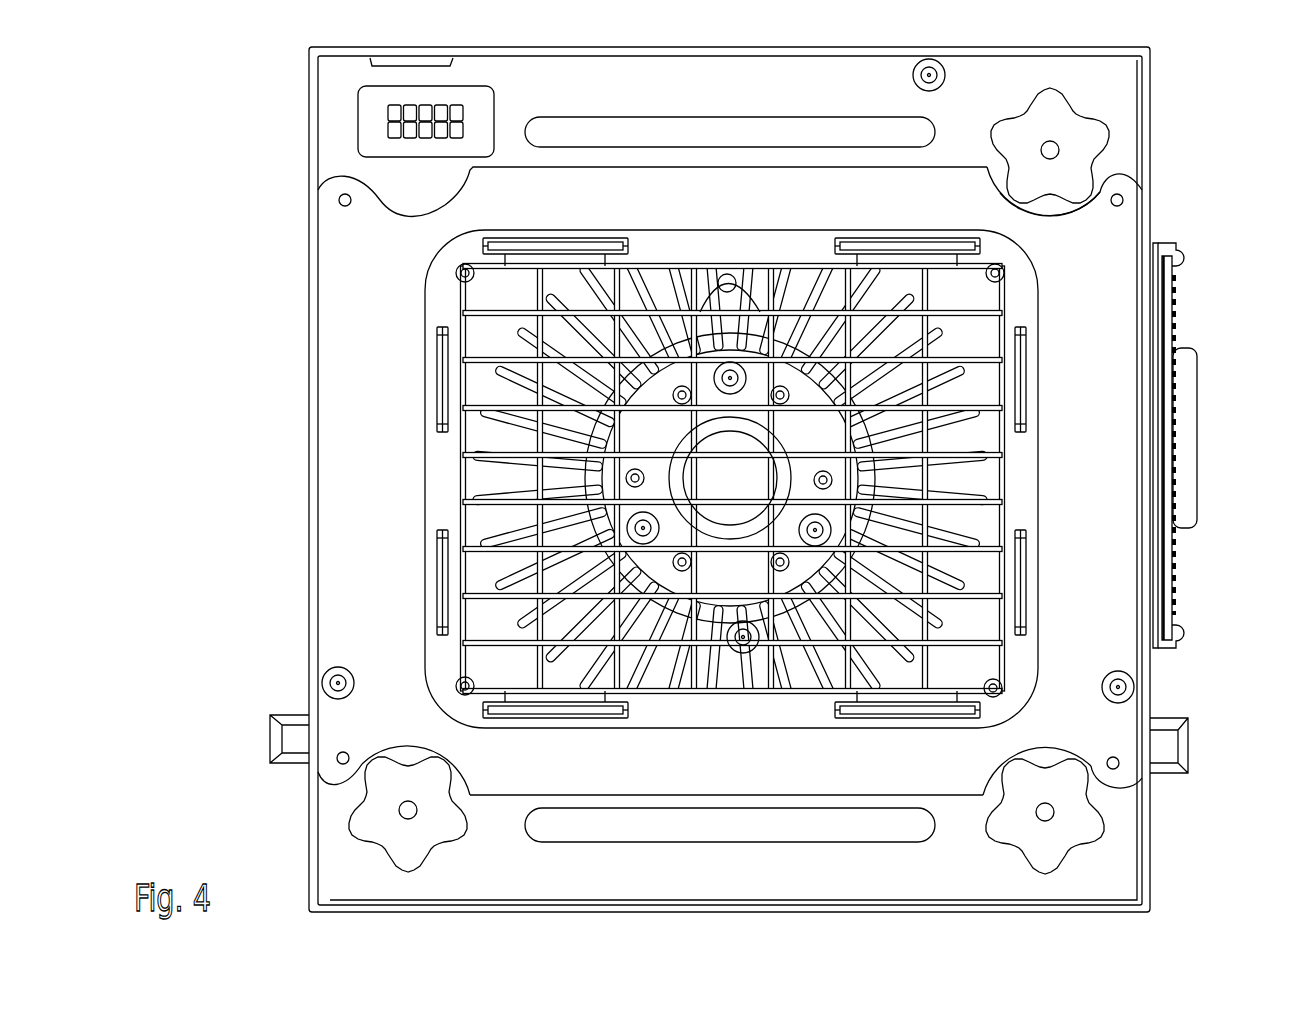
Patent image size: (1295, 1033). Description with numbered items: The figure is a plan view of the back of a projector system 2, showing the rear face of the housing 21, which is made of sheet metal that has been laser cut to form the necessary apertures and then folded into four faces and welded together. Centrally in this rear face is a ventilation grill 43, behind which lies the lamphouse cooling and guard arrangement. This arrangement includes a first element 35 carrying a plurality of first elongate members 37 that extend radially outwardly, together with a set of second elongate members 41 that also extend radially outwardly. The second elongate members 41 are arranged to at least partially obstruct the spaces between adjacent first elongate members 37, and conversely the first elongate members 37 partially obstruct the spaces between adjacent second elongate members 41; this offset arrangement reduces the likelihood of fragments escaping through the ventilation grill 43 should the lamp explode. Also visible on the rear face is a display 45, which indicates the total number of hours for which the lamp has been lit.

The projector system 2 is at (1178, 95).
The housing 21 is at (1122, 717).
The first element 35 is at (826, 449).
The first elongate members 37 is at (759, 478).
The second elongate members 41 is at (985, 396).
The ventilation grill 43 is at (935, 686).
The display 45 is at (486, 101).